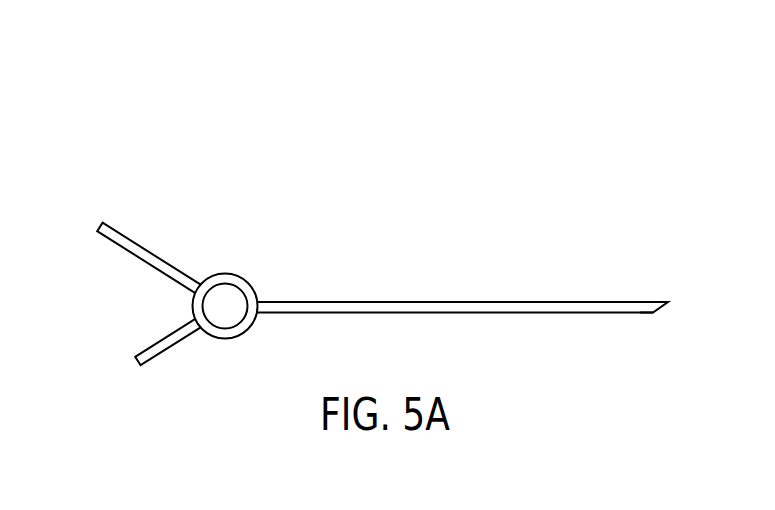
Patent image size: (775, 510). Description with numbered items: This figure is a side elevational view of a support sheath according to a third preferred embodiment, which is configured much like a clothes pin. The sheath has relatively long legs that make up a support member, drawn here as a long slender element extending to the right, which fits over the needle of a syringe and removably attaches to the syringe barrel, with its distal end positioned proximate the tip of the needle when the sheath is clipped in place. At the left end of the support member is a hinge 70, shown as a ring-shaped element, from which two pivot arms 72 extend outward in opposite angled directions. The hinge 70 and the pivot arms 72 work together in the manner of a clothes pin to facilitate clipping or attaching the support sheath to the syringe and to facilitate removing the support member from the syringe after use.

The hinge 70 is at (225, 283).
The pivot arms 72 is at (157, 338).